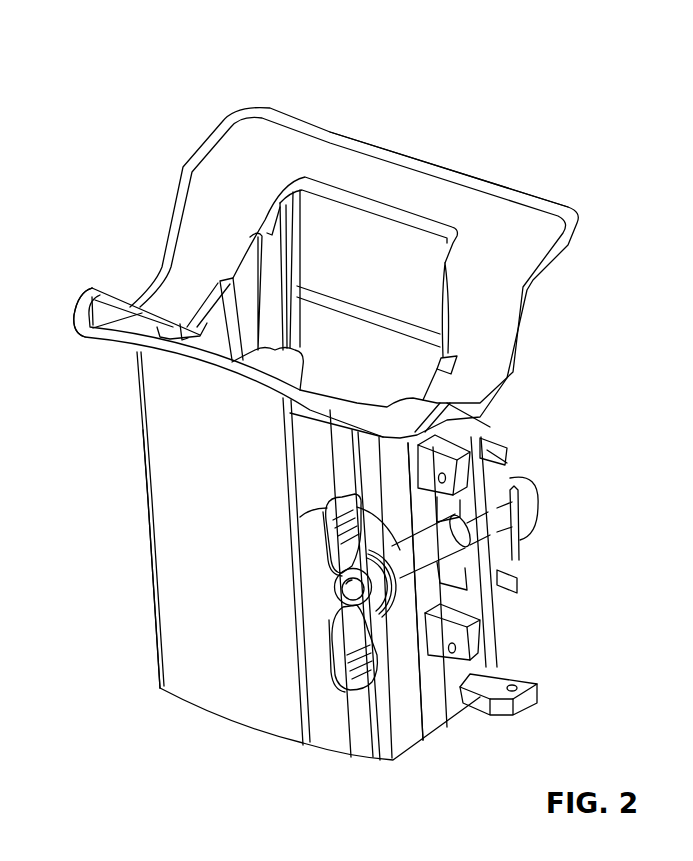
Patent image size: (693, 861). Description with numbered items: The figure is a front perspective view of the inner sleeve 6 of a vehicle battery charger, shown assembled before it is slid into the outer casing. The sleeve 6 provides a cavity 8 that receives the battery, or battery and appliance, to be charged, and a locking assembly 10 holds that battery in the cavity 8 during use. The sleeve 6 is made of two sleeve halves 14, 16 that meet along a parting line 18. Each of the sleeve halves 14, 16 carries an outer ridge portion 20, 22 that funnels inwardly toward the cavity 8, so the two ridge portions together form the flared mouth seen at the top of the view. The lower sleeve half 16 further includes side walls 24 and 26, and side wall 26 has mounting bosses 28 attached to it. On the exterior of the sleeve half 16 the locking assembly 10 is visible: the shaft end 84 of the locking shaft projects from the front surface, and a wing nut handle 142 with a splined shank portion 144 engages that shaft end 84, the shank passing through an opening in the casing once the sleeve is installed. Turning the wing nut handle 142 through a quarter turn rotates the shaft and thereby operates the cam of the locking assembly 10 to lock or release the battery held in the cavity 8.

The inner sleeve 6 is at (572, 112).
The cavity 8 is at (330, 242).
The locking assembly 10 is at (373, 740).
The sleeve half 14 is at (449, 162).
The sleeve half 16 is at (184, 543).
The parting line 18 is at (217, 340).
The outer ridge portion 20 is at (497, 303).
The outer ridge portion 22 is at (120, 337).
The side wall 24 is at (143, 491).
The side wall 26 is at (410, 740).
The mounting bosses 28 is at (463, 463).
The shaft end 84 is at (427, 555).
The wing nut handle 142 is at (332, 660).
The splined shank portion 144 is at (327, 512).